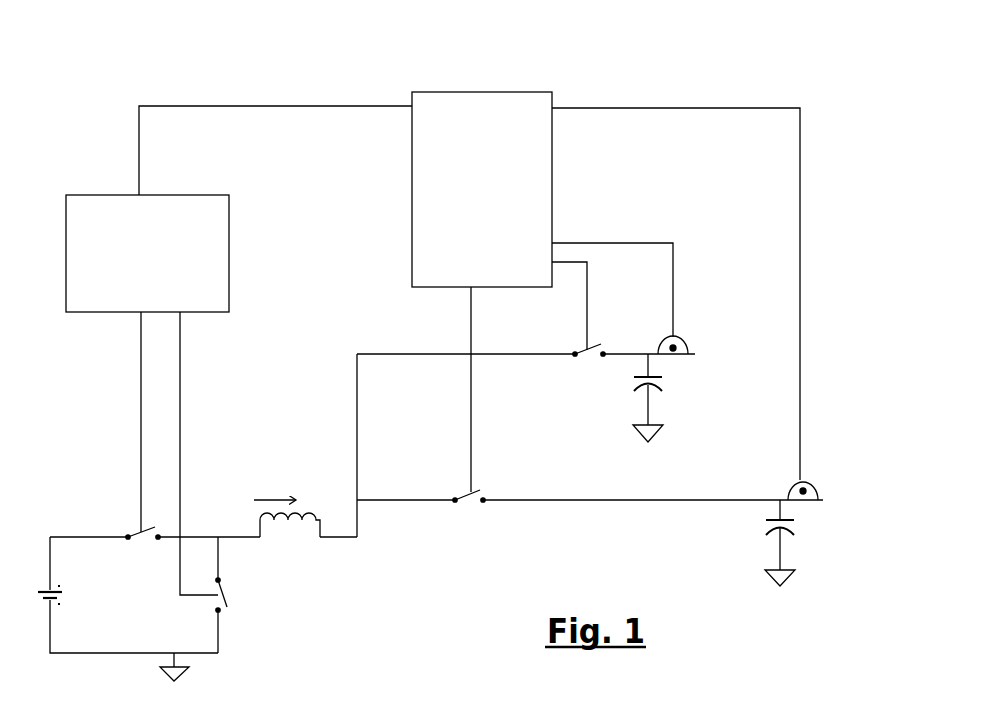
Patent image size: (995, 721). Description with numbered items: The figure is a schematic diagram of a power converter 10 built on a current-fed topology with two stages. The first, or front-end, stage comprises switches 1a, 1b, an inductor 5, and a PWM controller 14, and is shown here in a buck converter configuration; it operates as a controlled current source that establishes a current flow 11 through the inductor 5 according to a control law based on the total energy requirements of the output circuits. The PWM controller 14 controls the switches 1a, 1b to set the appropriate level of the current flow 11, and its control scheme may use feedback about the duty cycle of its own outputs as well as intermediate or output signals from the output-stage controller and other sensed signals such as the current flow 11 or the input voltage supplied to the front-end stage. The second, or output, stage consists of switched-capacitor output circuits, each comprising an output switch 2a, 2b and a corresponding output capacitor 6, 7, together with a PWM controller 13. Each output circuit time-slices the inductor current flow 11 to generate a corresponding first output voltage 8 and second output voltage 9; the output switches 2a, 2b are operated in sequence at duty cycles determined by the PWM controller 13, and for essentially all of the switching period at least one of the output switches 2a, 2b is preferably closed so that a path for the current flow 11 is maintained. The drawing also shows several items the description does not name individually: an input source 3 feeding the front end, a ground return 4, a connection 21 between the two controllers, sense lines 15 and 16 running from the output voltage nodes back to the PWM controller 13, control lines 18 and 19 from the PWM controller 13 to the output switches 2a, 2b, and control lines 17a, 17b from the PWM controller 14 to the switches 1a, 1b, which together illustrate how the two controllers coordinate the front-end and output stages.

The power converter 10 is at (121, 40).
The PWM controller 13 is at (447, 78).
The PWM controller 14 is at (110, 182).
The connection line between controllers 21 is at (307, 104).
The V1 sense line 15 is at (672, 236).
The V2 sense line 16 is at (806, 270).
The control line for switch 2a 18 is at (590, 285).
The control line for switch 2b 19 is at (468, 410).
The control line D1 for switch 1a 17a is at (140, 432).
The control line 1-D1 for switch 1b 17b is at (188, 393).
The switch 1a is at (126, 520).
The switch 1b is at (237, 611).
The output switch 2a is at (570, 342).
The output switch 2b is at (452, 488).
The input voltage source Vin 3 is at (38, 562).
The ground 4 is at (191, 676).
The inductor 5 is at (302, 546).
The output capacitor 6 is at (670, 395).
The output capacitor 7 is at (798, 548).
The output voltage V1 8 is at (708, 368).
The output voltage V2 9 is at (856, 531).
The current flow 11 is at (290, 471).